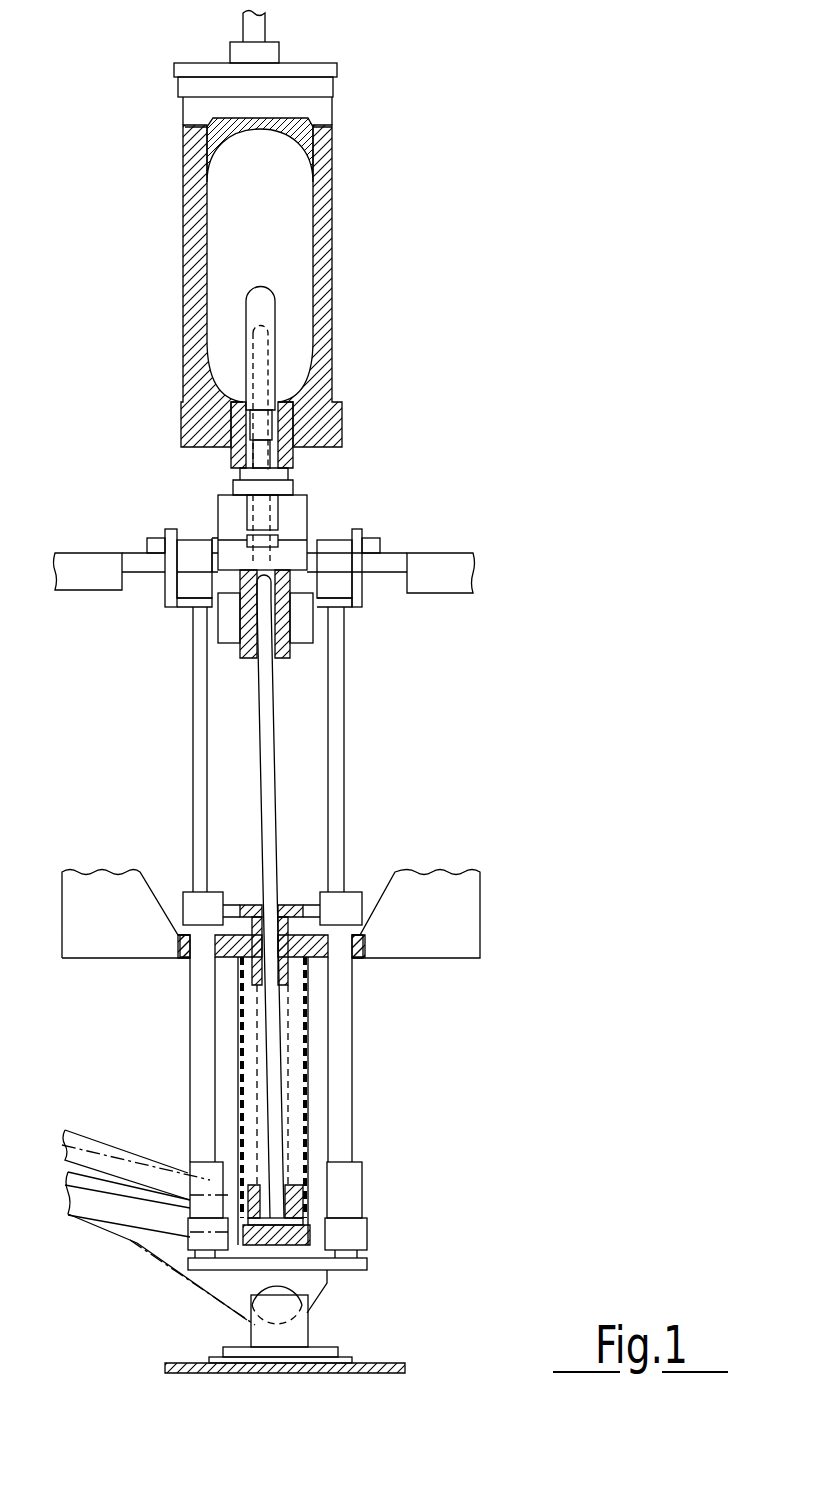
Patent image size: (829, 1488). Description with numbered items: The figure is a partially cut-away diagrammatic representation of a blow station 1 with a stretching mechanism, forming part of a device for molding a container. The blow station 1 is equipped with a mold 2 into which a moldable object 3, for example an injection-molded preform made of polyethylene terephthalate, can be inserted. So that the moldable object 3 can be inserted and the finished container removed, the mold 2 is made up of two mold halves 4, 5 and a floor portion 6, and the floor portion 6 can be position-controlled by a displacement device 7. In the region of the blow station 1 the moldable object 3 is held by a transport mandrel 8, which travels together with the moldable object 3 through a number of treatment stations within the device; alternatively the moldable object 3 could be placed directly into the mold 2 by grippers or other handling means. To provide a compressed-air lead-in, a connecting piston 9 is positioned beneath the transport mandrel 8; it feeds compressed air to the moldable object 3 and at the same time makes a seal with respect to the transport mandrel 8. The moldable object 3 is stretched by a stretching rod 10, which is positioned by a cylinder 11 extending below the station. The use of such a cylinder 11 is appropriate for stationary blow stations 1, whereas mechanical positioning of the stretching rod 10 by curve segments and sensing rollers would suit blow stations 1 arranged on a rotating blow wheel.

The blow station 1 is at (333, 175).
The mold 2 is at (333, 345).
The moldable object 3 is at (270, 287).
The mold half 4 is at (320, 215).
The mold half 5 is at (203, 222).
The floor portion 6 is at (205, 143).
The displacement device 7 is at (280, 50).
The transport mandrel 8 is at (192, 413).
The connecting piston 9 is at (297, 513).
The stretching rod 10 is at (267, 582).
The cylinder 11 is at (252, 1058).